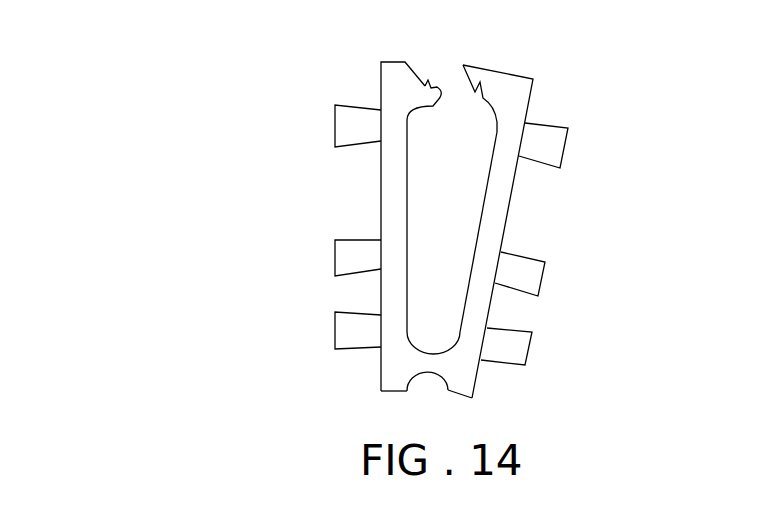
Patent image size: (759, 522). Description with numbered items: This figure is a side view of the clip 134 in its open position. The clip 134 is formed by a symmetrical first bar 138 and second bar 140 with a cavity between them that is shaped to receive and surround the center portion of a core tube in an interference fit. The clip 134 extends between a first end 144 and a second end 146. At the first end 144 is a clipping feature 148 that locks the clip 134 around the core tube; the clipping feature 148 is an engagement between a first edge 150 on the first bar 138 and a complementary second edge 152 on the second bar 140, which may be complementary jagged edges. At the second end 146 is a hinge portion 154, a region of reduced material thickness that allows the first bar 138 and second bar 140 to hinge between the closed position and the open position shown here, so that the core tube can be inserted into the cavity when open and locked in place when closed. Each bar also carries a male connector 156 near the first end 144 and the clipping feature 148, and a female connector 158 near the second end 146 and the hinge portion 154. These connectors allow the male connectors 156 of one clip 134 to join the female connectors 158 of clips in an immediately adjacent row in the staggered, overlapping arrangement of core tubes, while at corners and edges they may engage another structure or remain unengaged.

The clip 134 is at (636, 67).
The first bar 138 is at (390, 197).
The second bar 140 is at (497, 200).
The first end 144 is at (283, 104).
The second end 146 is at (369, 405).
The clipping feature 148 is at (444, 69).
The first edge 150 is at (433, 107).
The second edge 152 is at (475, 92).
The hinge portion 154 is at (433, 363).
The male connector 156 is at (543, 132).
The female connector 158 is at (335, 257).